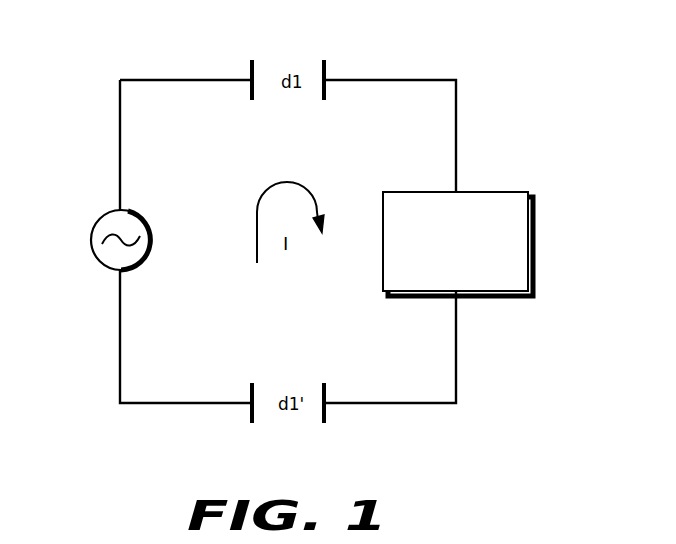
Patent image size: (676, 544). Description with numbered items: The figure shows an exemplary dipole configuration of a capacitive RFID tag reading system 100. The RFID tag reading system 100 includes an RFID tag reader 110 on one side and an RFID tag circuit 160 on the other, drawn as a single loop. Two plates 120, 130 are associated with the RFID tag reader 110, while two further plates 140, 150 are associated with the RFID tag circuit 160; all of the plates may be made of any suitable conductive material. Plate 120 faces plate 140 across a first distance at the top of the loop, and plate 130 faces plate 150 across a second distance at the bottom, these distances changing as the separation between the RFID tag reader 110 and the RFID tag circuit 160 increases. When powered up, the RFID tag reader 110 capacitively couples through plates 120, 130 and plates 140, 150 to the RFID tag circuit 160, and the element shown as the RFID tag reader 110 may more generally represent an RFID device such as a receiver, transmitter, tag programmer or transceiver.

The RFID tag reading system 100 is at (80, 32).
The RFID tag reader 110 is at (92, 237).
The plate 120 is at (250, 70).
The plate 130 is at (250, 409).
The plate 140 is at (326, 70).
The plate 150 is at (326, 409).
The RFID tag circuit 160 is at (532, 239).